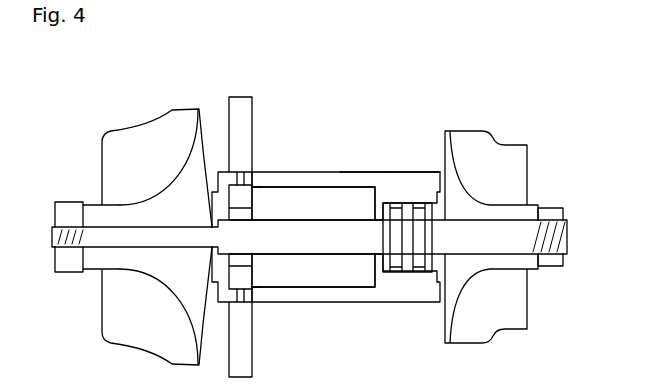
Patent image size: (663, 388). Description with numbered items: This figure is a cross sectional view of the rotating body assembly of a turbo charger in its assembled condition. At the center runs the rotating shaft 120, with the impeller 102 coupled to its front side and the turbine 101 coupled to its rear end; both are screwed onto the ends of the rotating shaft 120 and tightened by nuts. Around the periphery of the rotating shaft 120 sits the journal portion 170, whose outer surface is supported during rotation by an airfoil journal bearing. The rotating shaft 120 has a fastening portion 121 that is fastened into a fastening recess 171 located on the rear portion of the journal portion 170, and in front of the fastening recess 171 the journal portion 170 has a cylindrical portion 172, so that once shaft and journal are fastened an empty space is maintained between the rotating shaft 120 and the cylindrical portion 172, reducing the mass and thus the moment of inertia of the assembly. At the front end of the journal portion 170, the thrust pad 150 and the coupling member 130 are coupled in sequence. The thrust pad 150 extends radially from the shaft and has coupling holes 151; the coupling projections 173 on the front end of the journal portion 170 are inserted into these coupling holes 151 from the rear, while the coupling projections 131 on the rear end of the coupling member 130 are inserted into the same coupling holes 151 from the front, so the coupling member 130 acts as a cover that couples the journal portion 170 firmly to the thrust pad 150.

The turbine 101 is at (460, 180).
The impeller 102 is at (150, 172).
The rotating shaft 120 is at (310, 270).
The fastening portion 121 is at (409, 275).
The coupling member 130 is at (198, 190).
The coupling projections 131 is at (216, 170).
The thrust pad 150 is at (242, 96).
The coupling holes 151 is at (246, 178).
The journal portion 170 is at (358, 295).
The fastening recess 171 is at (408, 195).
The cylindrical portion 172 is at (364, 185).
The coupling projections 173 is at (262, 180).